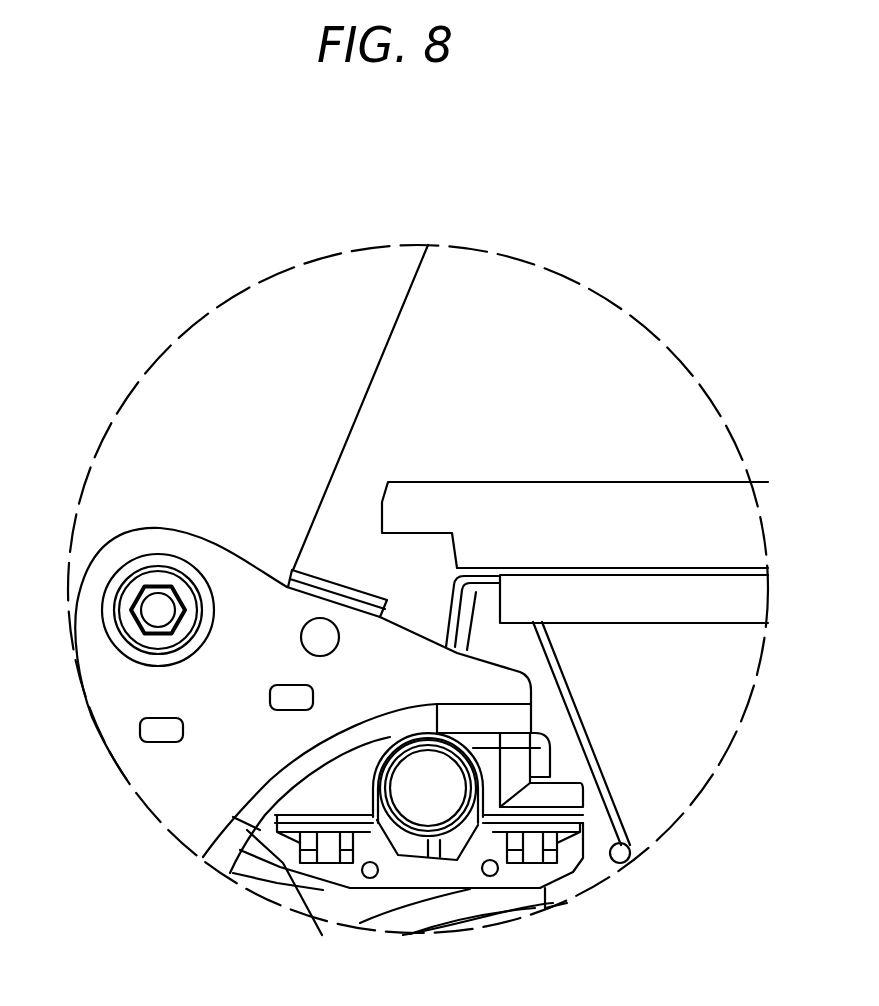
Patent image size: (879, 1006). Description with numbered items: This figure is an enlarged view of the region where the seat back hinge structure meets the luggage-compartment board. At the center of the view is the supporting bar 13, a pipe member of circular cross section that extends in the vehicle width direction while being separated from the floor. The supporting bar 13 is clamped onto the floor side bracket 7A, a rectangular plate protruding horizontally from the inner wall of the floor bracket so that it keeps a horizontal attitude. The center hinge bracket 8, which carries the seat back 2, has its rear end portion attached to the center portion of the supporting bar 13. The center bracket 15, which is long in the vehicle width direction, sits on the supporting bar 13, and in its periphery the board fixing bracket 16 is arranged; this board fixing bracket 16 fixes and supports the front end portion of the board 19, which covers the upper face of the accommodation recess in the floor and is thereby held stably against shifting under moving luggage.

The seat back 2 is at (393, 330).
The center hinge bracket 8 is at (103, 705).
The board 19 is at (628, 578).
The board fixing bracket 16 is at (443, 602).
The center bracket 15 is at (523, 747).
The supporting bar 13 is at (457, 858).
The floor side bracket 7A is at (397, 847).